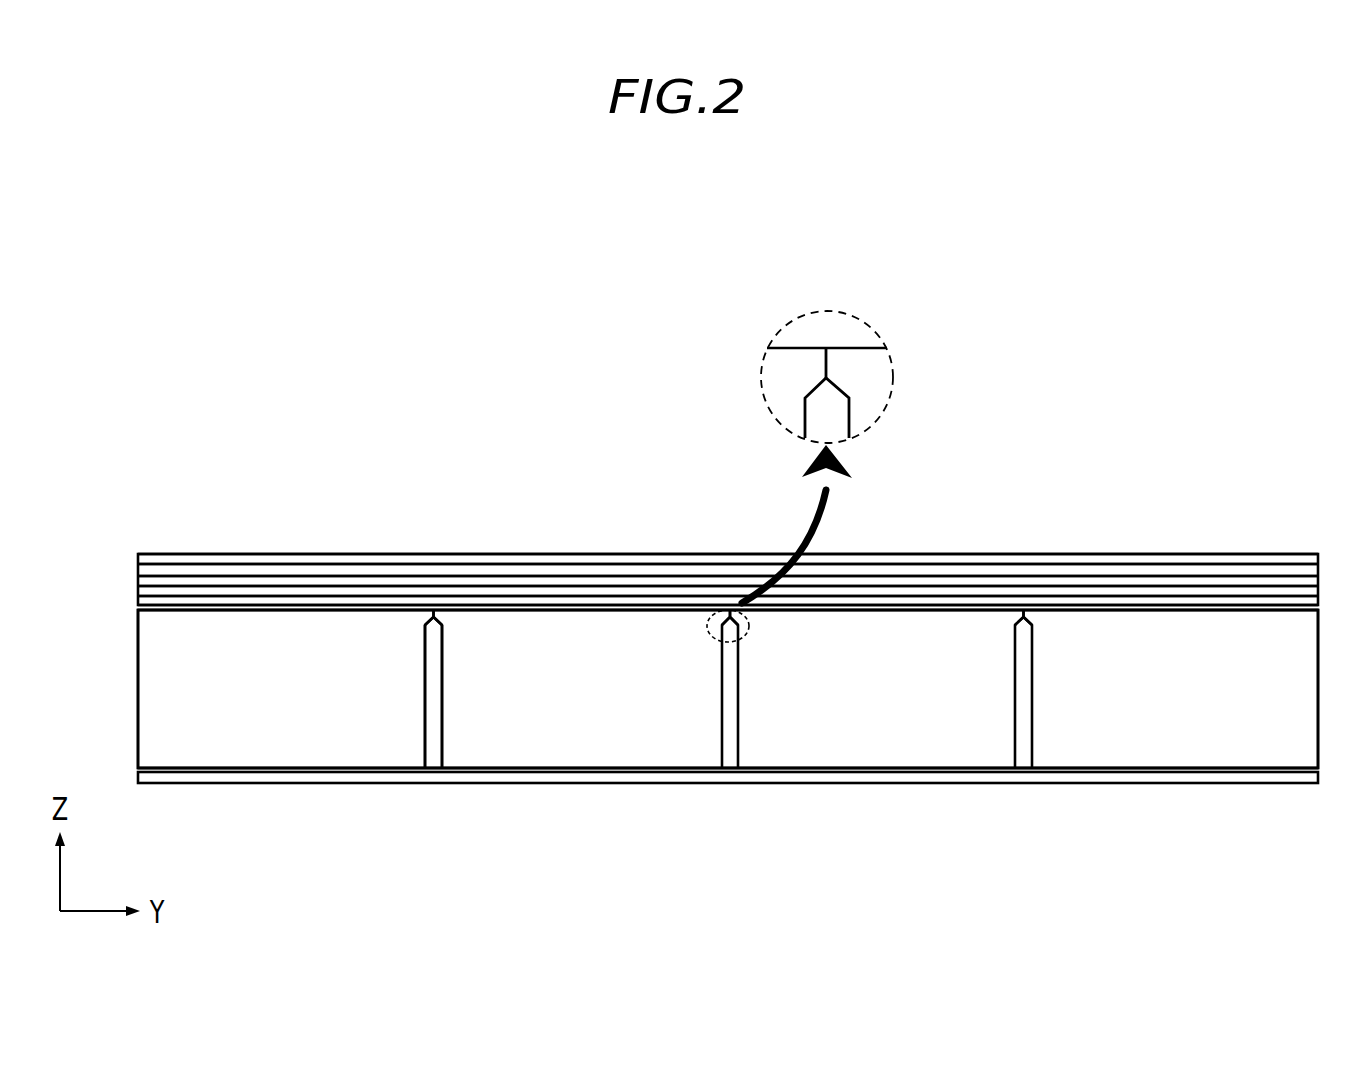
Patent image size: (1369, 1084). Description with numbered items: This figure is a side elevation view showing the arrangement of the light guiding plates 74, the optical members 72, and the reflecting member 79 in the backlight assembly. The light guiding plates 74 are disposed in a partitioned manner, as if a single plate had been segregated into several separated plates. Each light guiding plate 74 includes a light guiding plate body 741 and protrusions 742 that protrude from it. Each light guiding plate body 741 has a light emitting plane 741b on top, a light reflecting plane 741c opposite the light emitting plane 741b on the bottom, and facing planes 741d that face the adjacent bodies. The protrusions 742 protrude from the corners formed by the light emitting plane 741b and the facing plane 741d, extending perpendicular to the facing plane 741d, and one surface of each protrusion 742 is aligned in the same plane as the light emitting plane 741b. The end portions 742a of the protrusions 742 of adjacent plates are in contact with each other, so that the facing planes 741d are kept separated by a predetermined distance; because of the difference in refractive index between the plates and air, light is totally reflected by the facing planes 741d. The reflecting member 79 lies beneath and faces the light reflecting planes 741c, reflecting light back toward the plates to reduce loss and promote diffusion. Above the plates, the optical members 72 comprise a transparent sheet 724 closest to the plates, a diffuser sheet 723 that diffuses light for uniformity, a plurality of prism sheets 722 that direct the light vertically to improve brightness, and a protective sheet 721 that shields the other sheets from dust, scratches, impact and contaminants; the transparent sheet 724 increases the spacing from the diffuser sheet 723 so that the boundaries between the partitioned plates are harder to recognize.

The light guiding plate 74 is at (538, 758).
The optical members 72 is at (1177, 481).
The protective sheet 721 is at (978, 562).
The prism sheets 722 is at (1048, 582).
The diffuser sheet 723 is at (1103, 592).
The transparent sheet 724 is at (1162, 600).
The light guiding plate body 741 is at (620, 736).
The light emitting plane 741b is at (255, 607).
The light reflecting plane 741c is at (280, 769).
The facing plane 741d is at (427, 680).
The protrusion 742 is at (727, 603).
The end portion 742a is at (838, 362).
The reflecting member 79 is at (907, 773).